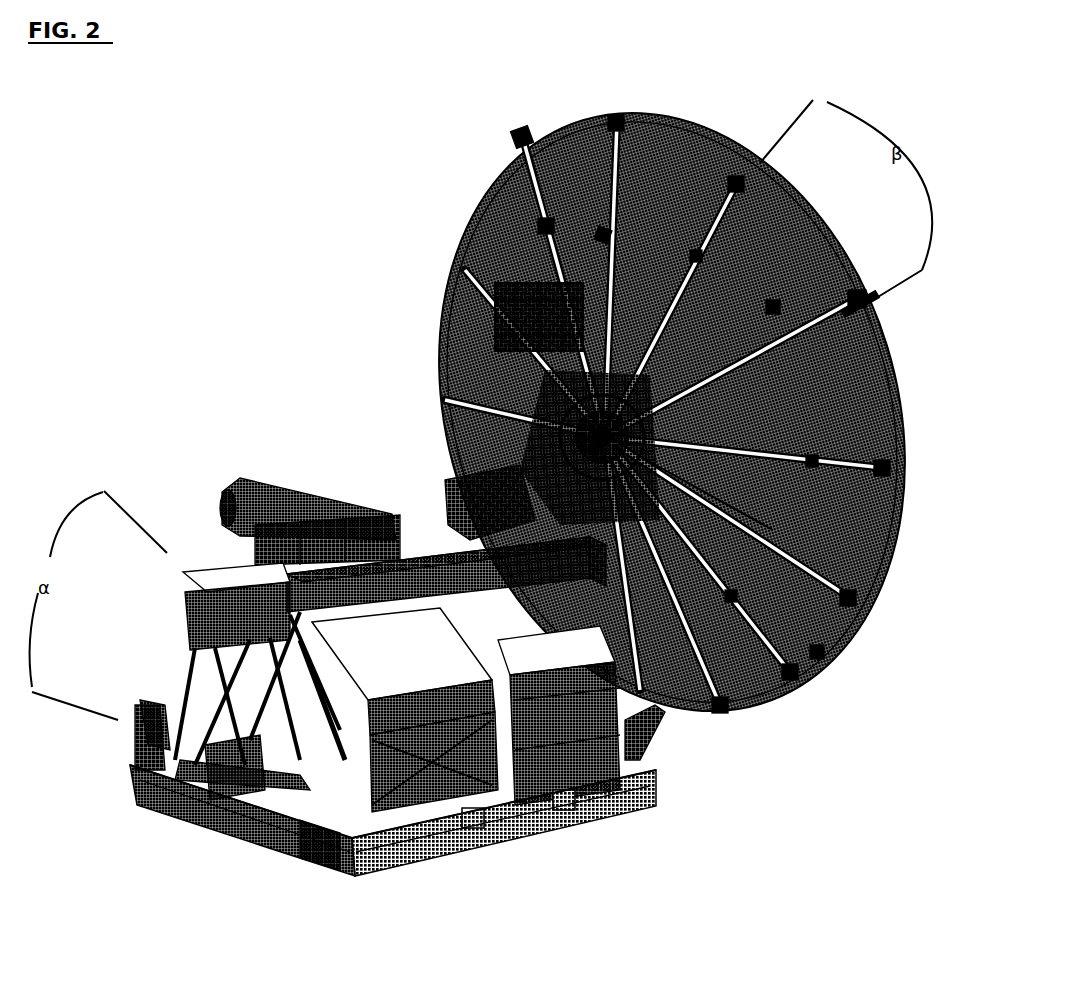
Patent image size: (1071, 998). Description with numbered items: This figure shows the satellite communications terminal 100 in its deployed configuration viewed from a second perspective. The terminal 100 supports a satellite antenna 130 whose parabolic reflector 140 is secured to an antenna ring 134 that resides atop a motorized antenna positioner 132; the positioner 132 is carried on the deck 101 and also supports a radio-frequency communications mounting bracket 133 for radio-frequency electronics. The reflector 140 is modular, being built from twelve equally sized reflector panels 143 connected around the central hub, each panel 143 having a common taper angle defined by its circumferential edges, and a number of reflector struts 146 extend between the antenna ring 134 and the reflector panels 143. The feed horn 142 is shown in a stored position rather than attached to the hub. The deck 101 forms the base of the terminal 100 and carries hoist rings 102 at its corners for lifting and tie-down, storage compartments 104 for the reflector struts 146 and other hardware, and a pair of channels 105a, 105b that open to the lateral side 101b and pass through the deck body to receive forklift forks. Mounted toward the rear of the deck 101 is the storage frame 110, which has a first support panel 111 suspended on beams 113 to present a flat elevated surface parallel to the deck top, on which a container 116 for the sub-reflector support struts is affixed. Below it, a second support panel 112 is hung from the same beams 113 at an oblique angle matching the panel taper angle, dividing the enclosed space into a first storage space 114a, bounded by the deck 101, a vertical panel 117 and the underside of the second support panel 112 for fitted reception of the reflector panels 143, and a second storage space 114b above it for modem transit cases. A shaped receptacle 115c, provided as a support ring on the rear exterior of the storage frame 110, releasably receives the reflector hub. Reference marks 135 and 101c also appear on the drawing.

The satellite communications terminal 100 is at (324, 144).
The satellite antenna 130 is at (651, 408).
The parabolic reflector 140 is at (672, 412).
The reflector struts 146 is at (687, 330).
The reflector panels 143 is at (820, 655).
The antenna ring 134 is at (502, 428).
The radio-frequency communications mounting bracket 133 is at (454, 294).
The motorized antenna positioner 132 is at (448, 470).
The counterweight arm 135 is at (271, 488).
The feed horn 142 is at (327, 498).
The container 116 is at (446, 536).
The first support panel 111 is at (212, 565).
The storage frame 110 is at (410, 702).
The beams 113 is at (280, 640).
The first storage space 114a is at (129, 782).
The second storage space 114b is at (422, 760).
The shaped receptacle 115c is at (207, 807).
The second support panel 112 is at (287, 763).
The deck 101 is at (393, 854).
The lateral side 101b is at (605, 761).
The base frame corner member 101c is at (281, 868).
The storage compartments 104 is at (393, 869).
The channel 105a is at (612, 843).
The channel 105b is at (521, 844).
The vertical panel 117 is at (442, 828).
The hoist rings 102 is at (694, 749).